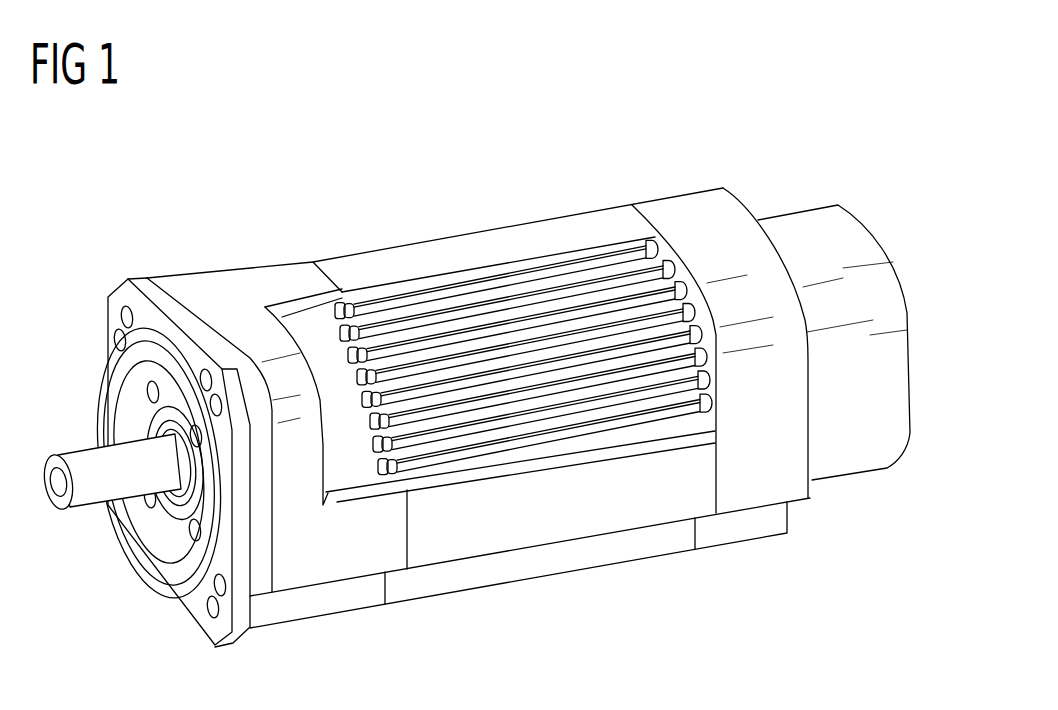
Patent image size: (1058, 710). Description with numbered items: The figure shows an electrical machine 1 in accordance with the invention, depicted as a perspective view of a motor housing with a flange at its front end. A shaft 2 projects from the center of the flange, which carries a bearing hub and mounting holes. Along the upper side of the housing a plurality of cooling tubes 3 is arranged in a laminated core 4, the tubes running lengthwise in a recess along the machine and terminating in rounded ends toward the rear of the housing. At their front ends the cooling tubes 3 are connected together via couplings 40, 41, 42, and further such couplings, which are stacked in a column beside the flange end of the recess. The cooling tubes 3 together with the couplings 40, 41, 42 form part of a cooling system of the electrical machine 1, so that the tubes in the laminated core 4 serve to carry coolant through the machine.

The electrical machine 1 is at (340, 185).
The shaft 2 is at (86, 494).
The cooling tubes 3 is at (497, 417).
The laminated core 4 is at (703, 337).
The coupling 40 is at (388, 478).
The coupling 41 is at (380, 455).
The coupling 42 is at (377, 430).